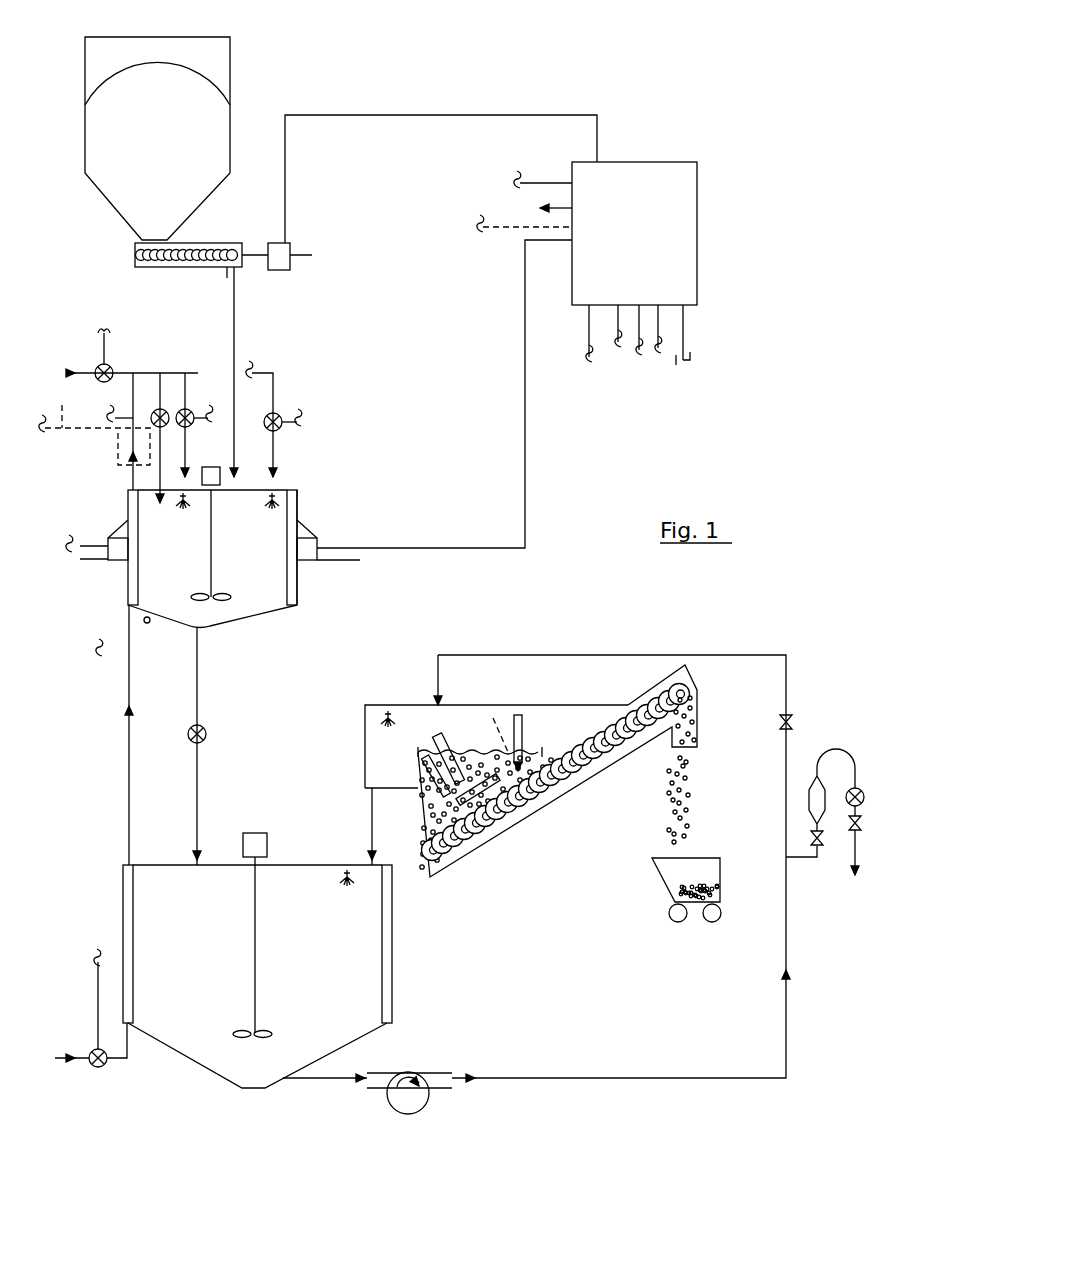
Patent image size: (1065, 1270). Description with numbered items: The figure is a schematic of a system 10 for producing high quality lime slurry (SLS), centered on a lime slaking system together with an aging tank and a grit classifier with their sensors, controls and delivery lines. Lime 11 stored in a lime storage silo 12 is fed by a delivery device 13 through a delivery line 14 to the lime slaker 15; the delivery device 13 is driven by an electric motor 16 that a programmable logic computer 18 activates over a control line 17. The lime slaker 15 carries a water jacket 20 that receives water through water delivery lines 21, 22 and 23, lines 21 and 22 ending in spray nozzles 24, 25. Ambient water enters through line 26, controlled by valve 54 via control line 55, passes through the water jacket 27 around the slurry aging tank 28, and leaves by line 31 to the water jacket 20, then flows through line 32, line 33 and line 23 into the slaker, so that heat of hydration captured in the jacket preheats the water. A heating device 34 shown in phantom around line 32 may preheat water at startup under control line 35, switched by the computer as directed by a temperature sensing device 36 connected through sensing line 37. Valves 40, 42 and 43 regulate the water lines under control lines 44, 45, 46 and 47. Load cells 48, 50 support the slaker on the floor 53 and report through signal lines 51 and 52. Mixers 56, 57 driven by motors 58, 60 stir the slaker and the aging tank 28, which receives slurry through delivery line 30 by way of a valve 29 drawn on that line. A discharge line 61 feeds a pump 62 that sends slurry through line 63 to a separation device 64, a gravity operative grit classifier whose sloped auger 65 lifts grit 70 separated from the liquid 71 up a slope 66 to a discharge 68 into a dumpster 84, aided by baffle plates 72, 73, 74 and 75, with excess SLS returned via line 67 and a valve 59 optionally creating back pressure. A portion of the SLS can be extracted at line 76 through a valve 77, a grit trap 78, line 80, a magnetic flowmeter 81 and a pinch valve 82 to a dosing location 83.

The system 10 is at (420, 95).
The lime 11 is at (177, 138).
The lime storage silo 12 is at (230, 44).
The delivery device 13 is at (203, 243).
The delivery line 14 is at (235, 326).
The lime slaker 15 is at (298, 490).
The electric motor 16 is at (295, 257).
The control line 17 is at (465, 115).
The programmable logic computer 18 is at (697, 212).
The water jacket 20 is at (297, 500).
The water delivery line 21 is at (278, 375).
The water delivery line 22 is at (186, 435).
The water delivery line 23 is at (133, 478).
The spray nozzle 24 is at (273, 505).
The spray nozzle 25 is at (186, 505).
The line 26 is at (85, 1065).
The water jacket 27 is at (123, 895).
The slurry aging tank 28 is at (215, 865).
The valve 29 is at (206, 736).
The delivery line 30 is at (198, 712).
The line 31 is at (127, 740).
The line 32 is at (133, 398).
The line 33 is at (130, 373).
The heating device 34 is at (118, 447).
The control line 35 is at (492, 215).
The temperature sensing device 36 is at (173, 627).
The sensing line 37 is at (589, 357).
The valve 40 is at (283, 412).
The valve 42 is at (165, 410).
The valve 43 is at (98, 367).
The control line 44 is at (618, 342).
The control line 45 is at (639, 350).
The control line 46 is at (660, 333).
The control line 47 is at (683, 358).
The load cell 48 is at (320, 538).
The load cell 50 is at (112, 538).
The signal line 51 is at (430, 548).
The signal line 52 is at (560, 195).
The floor 53 is at (350, 560).
The valve 54 is at (95, 1049).
The control line 55 is at (522, 183).
The mixer 56 is at (225, 598).
The mixer 57 is at (265, 1033).
The motor 58 is at (220, 472).
The valve 59 is at (790, 718).
The motor 60 is at (267, 848).
The discharge line 61 is at (305, 1080).
The pump 62 is at (413, 1072).
The line 63 is at (708, 1080).
The separation device 64 is at (490, 705).
The sloped auger 65 is at (553, 785).
The slope 66 is at (498, 838).
The line 67 is at (370, 805).
The discharge 68 is at (697, 745).
The grit 70 is at (690, 805).
The liquid 71 is at (447, 750).
The baffle plate 72 is at (522, 718).
The baffle plate 73 is at (468, 840).
The baffle plate 74 is at (432, 738).
The baffle plate 75 is at (423, 760).
The line 76 is at (807, 858).
The valve 77 is at (812, 843).
The grit trap 78 is at (817, 768).
The line 80 is at (858, 762).
The magnetic flowmeter 81 is at (864, 795).
The pinch valve 82 is at (862, 822).
The dosing location 83 is at (860, 855).
The dumpster 84 is at (705, 858).